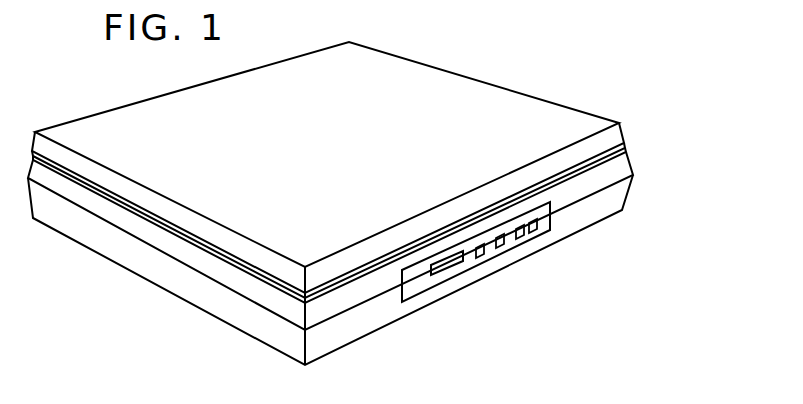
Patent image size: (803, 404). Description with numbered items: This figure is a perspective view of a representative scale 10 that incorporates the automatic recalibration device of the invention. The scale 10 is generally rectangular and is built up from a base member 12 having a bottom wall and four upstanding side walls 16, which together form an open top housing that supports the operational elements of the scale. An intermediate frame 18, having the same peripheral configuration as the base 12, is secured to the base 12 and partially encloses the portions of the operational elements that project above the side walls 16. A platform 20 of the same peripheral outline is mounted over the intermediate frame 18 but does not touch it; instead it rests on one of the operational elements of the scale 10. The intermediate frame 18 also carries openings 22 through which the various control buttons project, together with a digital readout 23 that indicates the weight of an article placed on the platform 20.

The scale 10 is at (511, 72).
The base member 12 is at (629, 194).
The side walls 16 is at (282, 343).
The intermediate frame 18 is at (172, 250).
The platform 20 is at (337, 163).
The openings 22 is at (520, 236).
The digital readout 23 is at (445, 267).